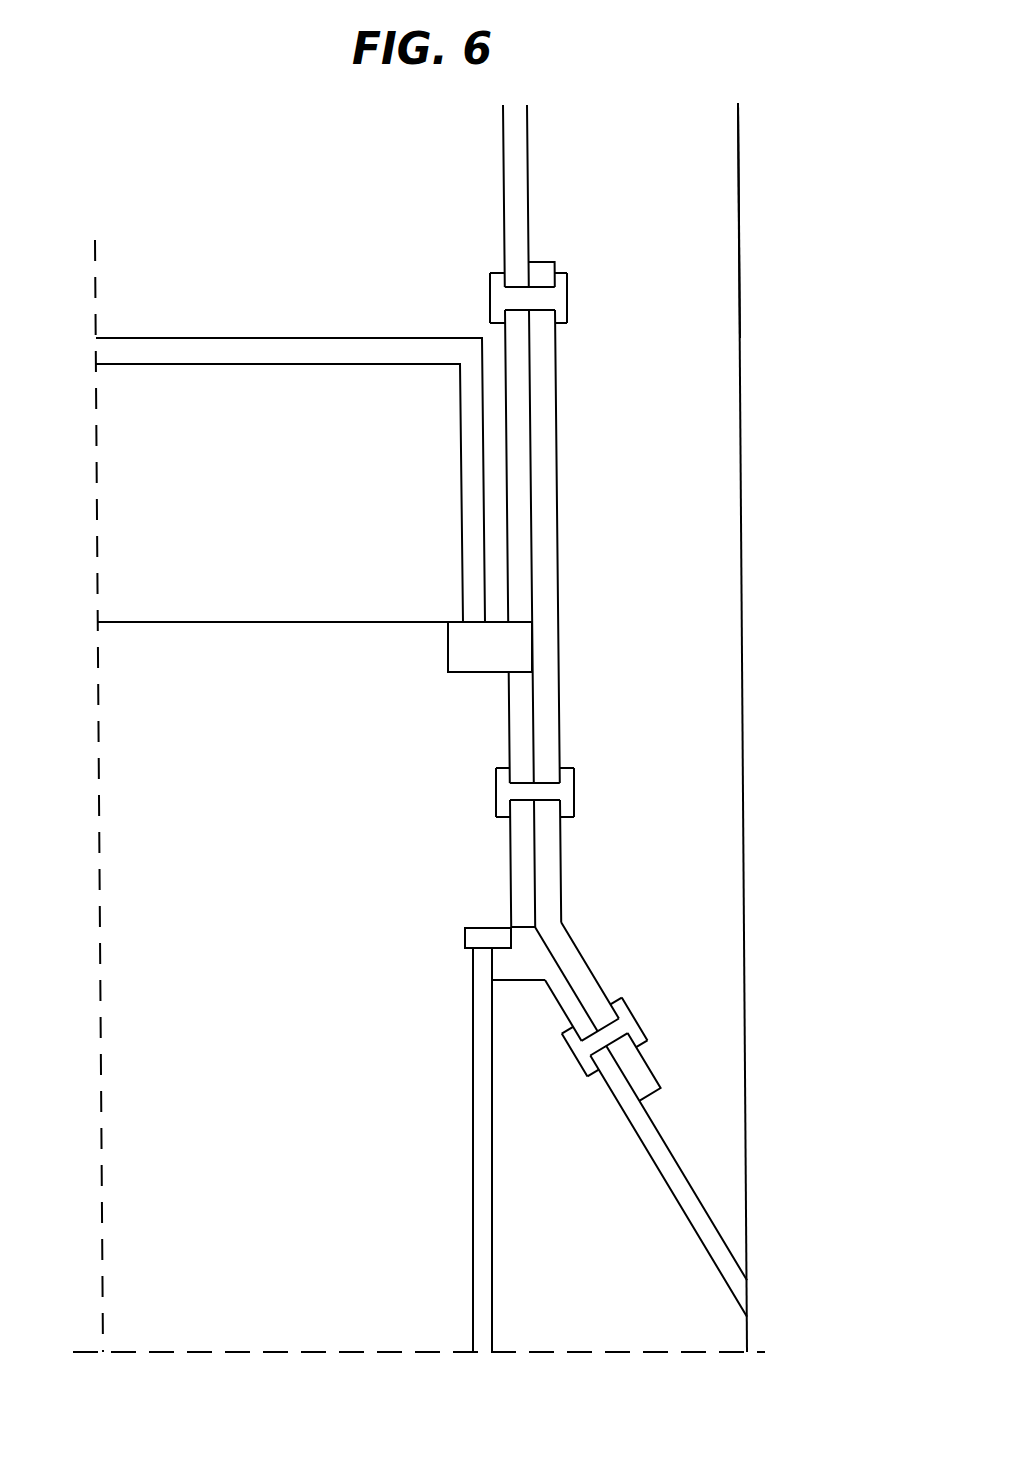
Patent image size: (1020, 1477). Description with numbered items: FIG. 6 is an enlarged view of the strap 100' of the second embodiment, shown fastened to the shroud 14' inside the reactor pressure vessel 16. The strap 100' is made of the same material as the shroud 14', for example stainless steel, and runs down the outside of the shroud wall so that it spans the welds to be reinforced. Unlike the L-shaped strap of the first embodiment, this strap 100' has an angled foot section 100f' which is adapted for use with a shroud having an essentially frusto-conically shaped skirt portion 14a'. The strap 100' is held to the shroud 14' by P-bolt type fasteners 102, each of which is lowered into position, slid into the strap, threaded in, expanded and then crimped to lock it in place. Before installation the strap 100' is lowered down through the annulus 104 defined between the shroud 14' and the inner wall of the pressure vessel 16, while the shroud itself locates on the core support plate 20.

The shroud 14' is at (491, 516).
The frusto-conically shaped skirt portion 14a' is at (646, 1148).
The reactor pressure vessel 16 is at (741, 549).
The core support plate 20 is at (170, 364).
The strap 100' is at (578, 592).
The angled foot section 100f' is at (585, 1137).
The P-bolt 102 is at (494, 298).
The annulus 104 is at (653, 290).